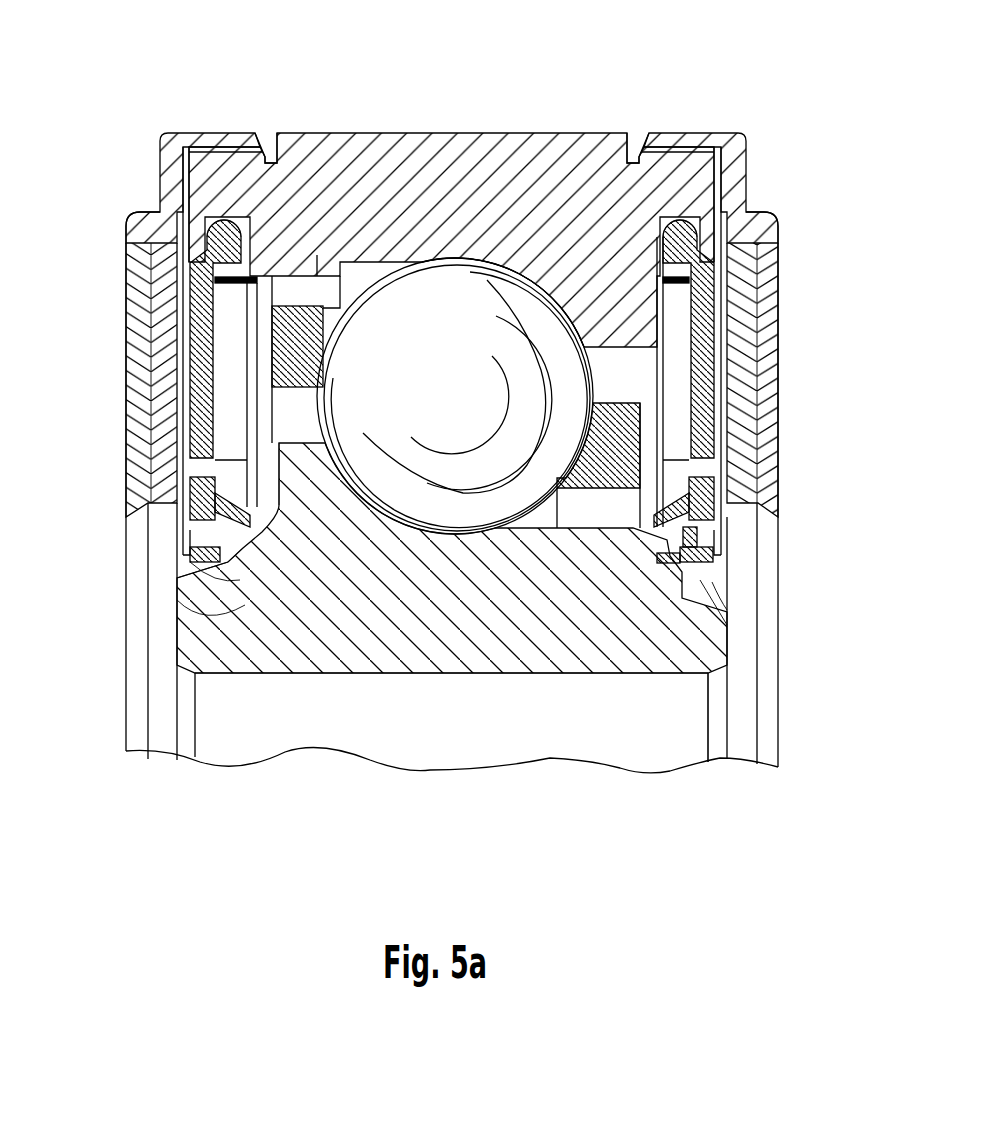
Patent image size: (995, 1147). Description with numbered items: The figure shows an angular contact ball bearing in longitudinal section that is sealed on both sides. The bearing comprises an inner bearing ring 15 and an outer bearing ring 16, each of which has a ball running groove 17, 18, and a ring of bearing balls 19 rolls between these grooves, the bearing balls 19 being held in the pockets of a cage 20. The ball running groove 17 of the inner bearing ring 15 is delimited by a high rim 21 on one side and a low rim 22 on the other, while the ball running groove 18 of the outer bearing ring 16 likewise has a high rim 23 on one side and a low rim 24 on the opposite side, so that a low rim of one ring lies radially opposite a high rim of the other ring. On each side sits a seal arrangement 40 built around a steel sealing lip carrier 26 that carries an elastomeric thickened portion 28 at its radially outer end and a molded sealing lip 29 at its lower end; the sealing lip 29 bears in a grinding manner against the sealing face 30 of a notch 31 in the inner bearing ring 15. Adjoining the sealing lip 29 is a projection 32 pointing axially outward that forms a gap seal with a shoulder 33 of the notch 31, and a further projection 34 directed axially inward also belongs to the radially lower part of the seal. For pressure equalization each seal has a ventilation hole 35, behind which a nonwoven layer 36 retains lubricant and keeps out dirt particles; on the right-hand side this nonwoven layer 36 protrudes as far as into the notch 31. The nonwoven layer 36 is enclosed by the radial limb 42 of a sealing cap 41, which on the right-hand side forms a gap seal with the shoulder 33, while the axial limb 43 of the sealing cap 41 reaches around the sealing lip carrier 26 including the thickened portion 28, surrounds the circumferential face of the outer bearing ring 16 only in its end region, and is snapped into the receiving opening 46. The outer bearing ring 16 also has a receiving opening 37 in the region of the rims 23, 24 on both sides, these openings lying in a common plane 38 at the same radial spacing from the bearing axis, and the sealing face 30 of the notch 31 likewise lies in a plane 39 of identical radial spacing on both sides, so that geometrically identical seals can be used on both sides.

The inner bearing ring 15 is at (476, 550).
The outer bearing ring 16 is at (474, 147).
The ball running groove 17 is at (418, 530).
The ball running groove 18 is at (508, 258).
The bearing balls 19 is at (470, 402).
The cage 20 is at (617, 420).
The high rim 21 is at (302, 460).
The low rim 22 is at (568, 537).
The high rim 23 is at (611, 320).
The low rim 24 is at (401, 247).
The sealing lip carrier 26 is at (200, 309).
The thickened portion 28 is at (205, 252).
The sealing lip 29 is at (205, 620).
The sealing face 30 is at (220, 671).
The notch 31 is at (215, 597).
The projection 32 is at (183, 547).
The shoulder 33 is at (210, 566).
The projection 34 is at (197, 493).
The ventilation hole 35 is at (203, 468).
The nonwoven layer 36 is at (160, 432).
The receiving opening 37 is at (452, 123).
The plane 38 is at (234, 232).
The plane 39 is at (250, 517).
The seal arrangement 40 is at (122, 364).
The sealing cap 41 is at (455, 380).
The radial limb 42 is at (138, 399).
The axial limb 43 is at (201, 132).
The receiving opening 46 is at (268, 150).